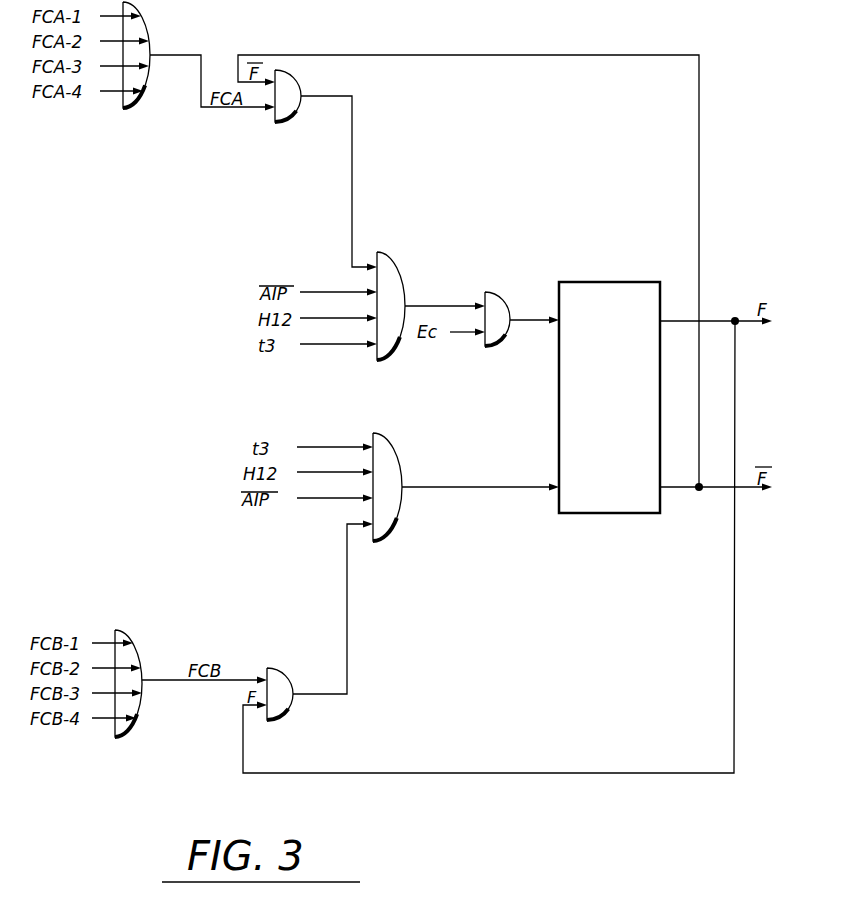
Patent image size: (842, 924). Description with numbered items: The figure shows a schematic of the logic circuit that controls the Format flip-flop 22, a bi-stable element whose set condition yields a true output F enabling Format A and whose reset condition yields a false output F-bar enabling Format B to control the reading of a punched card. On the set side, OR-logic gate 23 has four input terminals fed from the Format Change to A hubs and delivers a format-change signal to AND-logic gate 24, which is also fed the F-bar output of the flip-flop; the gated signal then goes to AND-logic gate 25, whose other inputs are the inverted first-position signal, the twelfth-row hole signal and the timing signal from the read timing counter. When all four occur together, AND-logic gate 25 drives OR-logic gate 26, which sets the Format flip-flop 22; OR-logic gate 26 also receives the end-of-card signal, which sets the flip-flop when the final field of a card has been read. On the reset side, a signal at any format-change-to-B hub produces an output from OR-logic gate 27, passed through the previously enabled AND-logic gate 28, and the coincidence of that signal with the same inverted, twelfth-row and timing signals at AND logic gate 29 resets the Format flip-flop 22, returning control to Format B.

The Format flip-flop 22 is at (589, 284).
The OR-logic gate 23 is at (141, 29).
The AND-logic gate 24 is at (299, 98).
The AND-logic gate 25 is at (390, 279).
The OR-logic gate 26 is at (507, 308).
The OR-logic gate 27 is at (134, 657).
The AND-logic gate 28 is at (285, 684).
The AND logic gate 29 is at (390, 458).